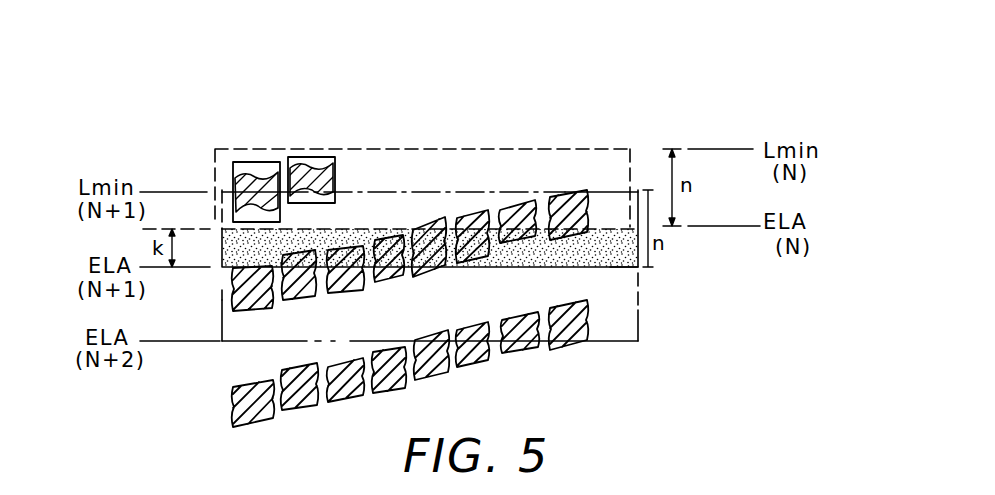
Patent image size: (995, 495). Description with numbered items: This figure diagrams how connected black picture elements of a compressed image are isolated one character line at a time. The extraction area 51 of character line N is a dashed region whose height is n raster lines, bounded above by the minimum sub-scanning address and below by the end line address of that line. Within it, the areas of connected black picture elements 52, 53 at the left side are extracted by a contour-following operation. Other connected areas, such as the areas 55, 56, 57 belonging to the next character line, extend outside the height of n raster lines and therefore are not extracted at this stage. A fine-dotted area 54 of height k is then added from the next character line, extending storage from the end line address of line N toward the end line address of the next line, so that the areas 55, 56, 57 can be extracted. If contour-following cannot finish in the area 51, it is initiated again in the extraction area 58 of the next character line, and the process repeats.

The extraction area of character line N 51 is at (610, 149).
The area of connected black picture elements 52 is at (266, 162).
The area of connected black picture elements 53 is at (325, 158).
The added area 54 is at (595, 257).
The area of connected black picture elements 55 is at (470, 253).
The area of connected black picture elements 56 is at (515, 200).
The area of connected black picture elements 57 is at (562, 242).
The extraction area of character line N+1 58 is at (628, 266).